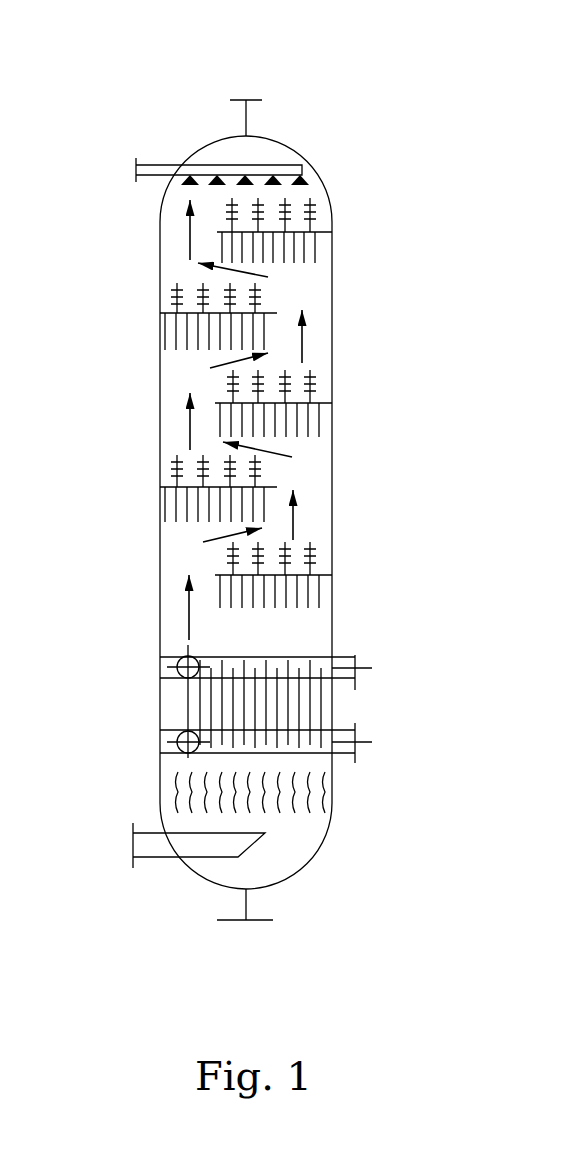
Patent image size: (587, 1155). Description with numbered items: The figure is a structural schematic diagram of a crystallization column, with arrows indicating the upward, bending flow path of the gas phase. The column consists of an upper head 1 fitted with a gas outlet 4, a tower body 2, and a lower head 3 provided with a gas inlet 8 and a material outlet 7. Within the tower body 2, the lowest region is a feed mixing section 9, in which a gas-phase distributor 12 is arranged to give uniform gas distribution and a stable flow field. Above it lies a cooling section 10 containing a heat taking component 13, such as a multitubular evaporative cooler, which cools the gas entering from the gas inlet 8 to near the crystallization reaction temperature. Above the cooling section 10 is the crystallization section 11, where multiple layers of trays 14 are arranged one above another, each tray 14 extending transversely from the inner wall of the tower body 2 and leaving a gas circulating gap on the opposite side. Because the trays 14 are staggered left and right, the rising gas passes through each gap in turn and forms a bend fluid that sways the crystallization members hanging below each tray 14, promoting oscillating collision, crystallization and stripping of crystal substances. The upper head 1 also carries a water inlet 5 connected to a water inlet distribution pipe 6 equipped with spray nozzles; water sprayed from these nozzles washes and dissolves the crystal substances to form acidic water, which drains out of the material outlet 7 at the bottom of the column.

The upper head 1 is at (323, 180).
The tower body 2 is at (332, 357).
The lower head 3 is at (310, 870).
The gas outlet 4 is at (245, 115).
The water inlet 5 is at (136, 172).
The water inlet distribution pipe 6 is at (203, 165).
The material outlet 7 is at (230, 920).
The gas inlet 8 is at (133, 845).
The feed mixing section 9 is at (243, 813).
The cooling section 10 is at (245, 690).
The crystallization section 11 is at (160, 413).
The gas-phase distributor 12 is at (325, 783).
The heat taking component 13 is at (335, 655).
The tray 14 is at (205, 305).